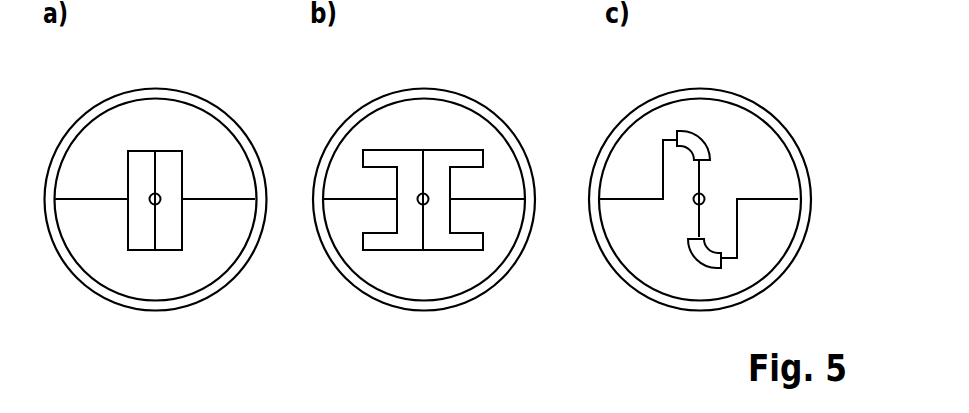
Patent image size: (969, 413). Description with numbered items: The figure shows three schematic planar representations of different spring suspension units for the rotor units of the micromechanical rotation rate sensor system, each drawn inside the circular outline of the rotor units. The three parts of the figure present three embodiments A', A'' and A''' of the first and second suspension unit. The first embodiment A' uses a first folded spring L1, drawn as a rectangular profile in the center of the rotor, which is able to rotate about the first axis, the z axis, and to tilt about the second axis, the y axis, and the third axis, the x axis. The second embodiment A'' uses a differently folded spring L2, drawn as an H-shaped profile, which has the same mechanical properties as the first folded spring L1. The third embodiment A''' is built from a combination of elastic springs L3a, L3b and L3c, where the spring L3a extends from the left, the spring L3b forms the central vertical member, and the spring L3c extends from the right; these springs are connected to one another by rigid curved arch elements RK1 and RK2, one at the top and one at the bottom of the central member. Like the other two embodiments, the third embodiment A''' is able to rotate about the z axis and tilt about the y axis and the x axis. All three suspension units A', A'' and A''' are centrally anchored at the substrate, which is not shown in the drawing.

The first folded spring L1 is at (140, 150).
The differently folded spring L2 is at (402, 150).
The elastic spring L3a is at (637, 202).
The elastic spring L3b is at (702, 173).
The elastic spring L3c is at (768, 201).
The rigid curved arch element RK1 is at (690, 142).
The rigid curved arch element RK2 is at (708, 253).
The first embodiment of suspension unit A' is at (155, 199).
The second embodiment of suspension unit A'' is at (424, 199).
The third embodiment of suspension unit A''' is at (722, 199).